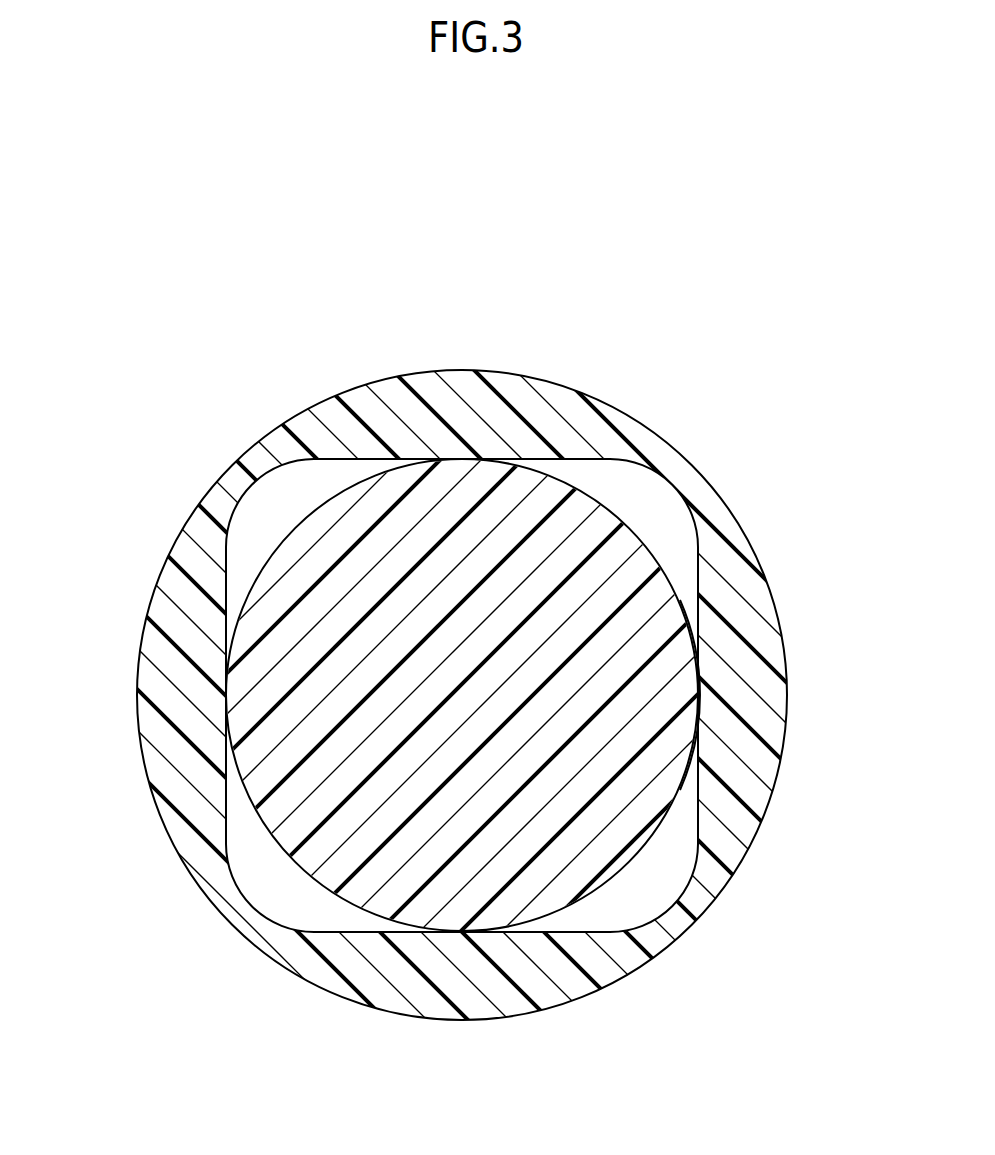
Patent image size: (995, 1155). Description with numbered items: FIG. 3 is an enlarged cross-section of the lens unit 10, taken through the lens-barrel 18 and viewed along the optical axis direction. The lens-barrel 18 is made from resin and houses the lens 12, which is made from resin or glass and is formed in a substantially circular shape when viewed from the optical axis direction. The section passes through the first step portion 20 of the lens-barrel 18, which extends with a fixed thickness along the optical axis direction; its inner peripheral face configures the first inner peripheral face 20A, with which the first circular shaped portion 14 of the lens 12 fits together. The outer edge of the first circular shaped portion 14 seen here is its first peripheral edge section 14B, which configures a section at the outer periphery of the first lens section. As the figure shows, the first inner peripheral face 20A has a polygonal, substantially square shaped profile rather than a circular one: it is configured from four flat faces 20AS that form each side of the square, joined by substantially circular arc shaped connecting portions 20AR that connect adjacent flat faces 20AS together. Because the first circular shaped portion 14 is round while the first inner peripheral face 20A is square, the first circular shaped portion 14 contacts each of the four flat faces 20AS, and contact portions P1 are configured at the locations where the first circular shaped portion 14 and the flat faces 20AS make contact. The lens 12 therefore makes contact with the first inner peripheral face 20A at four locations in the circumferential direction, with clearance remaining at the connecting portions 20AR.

The lens unit 10 is at (497, 675).
The lens-barrel 18 is at (497, 699).
The first step portion 20 is at (502, 373).
The lens 12 is at (497, 700).
The first circular shaped portion 14 is at (615, 507).
The first peripheral edge section 14B is at (697, 603).
The first inner peripheral face 20A is at (465, 736).
The connecting portions 20AR is at (255, 497).
The flat faces 20AS is at (550, 468).
The contact portions P1 is at (458, 458).